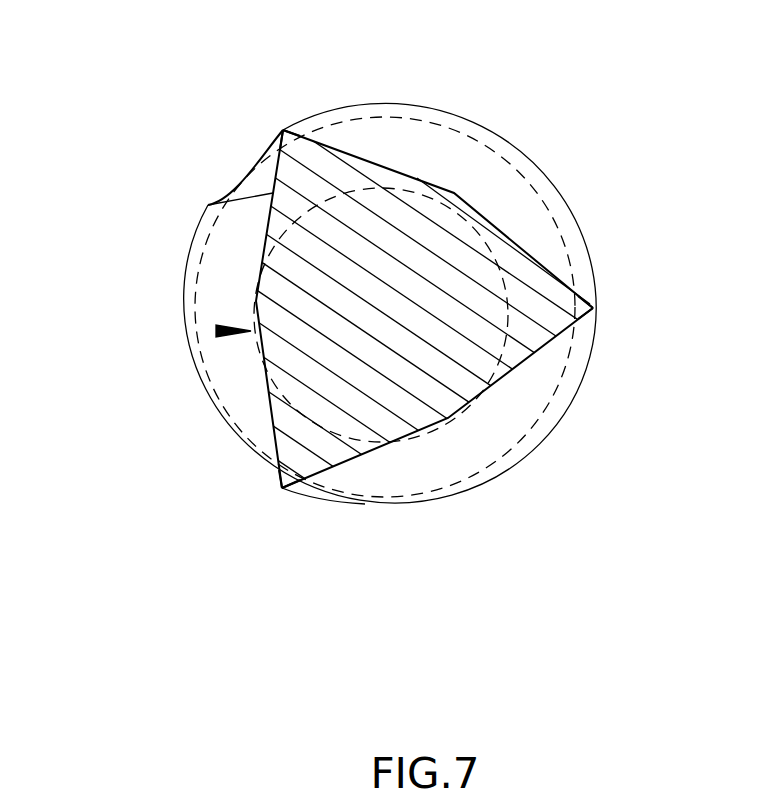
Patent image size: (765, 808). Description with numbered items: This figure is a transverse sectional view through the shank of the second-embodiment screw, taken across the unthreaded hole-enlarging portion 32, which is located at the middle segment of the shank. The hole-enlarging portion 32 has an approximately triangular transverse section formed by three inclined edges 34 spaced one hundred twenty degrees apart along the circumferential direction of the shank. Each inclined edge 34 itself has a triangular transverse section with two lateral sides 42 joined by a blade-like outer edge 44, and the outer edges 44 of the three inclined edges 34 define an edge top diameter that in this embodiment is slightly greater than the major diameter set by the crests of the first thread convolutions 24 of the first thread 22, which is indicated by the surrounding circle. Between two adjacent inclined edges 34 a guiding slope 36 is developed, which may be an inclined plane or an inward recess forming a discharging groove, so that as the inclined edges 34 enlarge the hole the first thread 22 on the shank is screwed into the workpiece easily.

The first thread 22 is at (249, 172).
The first thread convolutions 24 is at (484, 152).
The hole-enlarging portion 32 is at (216, 331).
The inclined edges 34 is at (353, 175).
The guiding slope 36 is at (460, 393).
The lateral sides 42 is at (538, 265).
The blade-like outer edge 44 is at (283, 130).